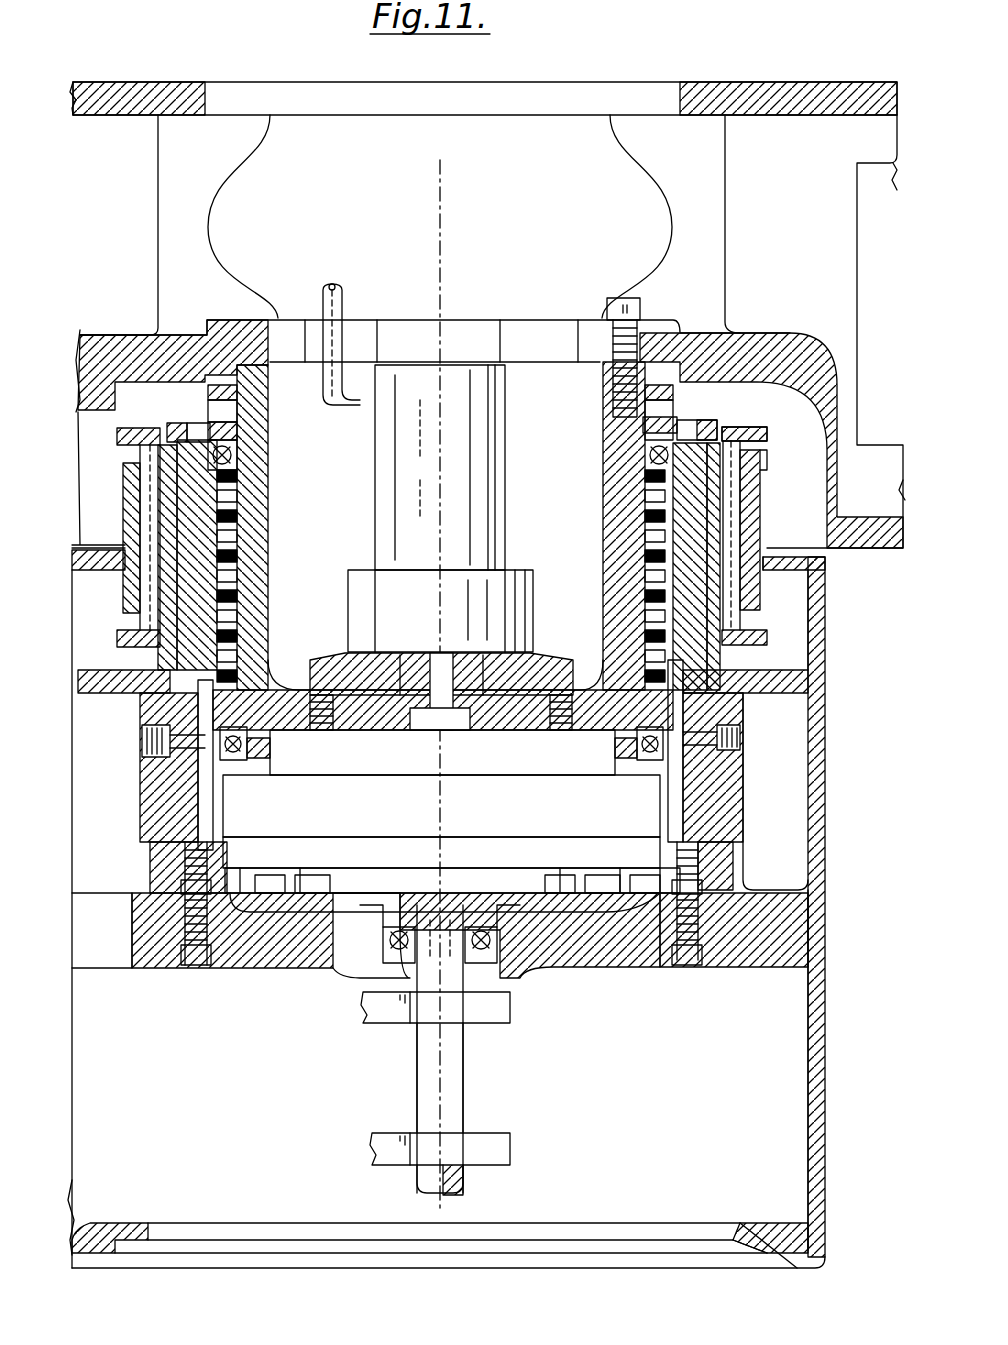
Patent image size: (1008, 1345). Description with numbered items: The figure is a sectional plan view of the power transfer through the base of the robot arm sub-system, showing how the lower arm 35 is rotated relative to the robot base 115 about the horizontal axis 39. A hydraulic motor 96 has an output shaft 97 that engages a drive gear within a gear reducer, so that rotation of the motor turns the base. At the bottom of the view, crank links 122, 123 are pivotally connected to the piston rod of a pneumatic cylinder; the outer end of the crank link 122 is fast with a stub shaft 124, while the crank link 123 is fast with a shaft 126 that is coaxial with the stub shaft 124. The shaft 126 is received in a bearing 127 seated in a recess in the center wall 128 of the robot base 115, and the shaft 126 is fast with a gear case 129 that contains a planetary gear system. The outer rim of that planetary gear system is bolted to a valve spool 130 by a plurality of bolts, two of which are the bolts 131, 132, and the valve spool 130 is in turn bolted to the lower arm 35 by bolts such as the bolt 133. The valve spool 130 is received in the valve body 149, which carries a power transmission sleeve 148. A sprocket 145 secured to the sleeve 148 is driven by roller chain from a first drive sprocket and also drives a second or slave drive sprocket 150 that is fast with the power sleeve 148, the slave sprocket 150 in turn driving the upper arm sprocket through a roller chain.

The lower arm 35 is at (760, 90).
The bolt 133 is at (622, 300).
The valve spool 130 is at (262, 492).
The bolt 132 is at (588, 690).
The hydraulic motor 96 is at (495, 468).
The output shaft 97 is at (432, 660).
The second drive sprocket 150 is at (757, 426).
The power transmission sleeve 148 is at (760, 492).
The sprocket 145 is at (773, 632).
The valve body 149 is at (730, 697).
The gear case 129 is at (530, 824).
The bolt 131 is at (303, 893).
The center wall 128 is at (165, 962).
The bearing 127 is at (372, 958).
The shaft 126 is at (455, 990).
The crank link 123 is at (395, 1020).
The horizontal axis 39 is at (442, 1085).
The crank link 122 is at (372, 1152).
The stub shaft 124 is at (468, 1180).
The robot base 115 is at (828, 1103).